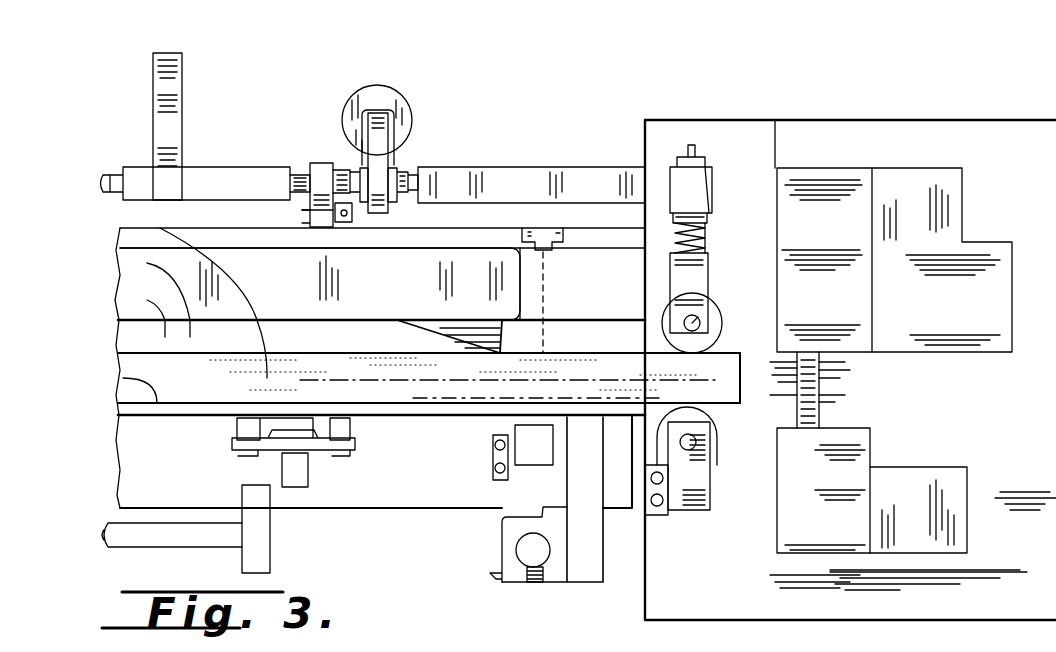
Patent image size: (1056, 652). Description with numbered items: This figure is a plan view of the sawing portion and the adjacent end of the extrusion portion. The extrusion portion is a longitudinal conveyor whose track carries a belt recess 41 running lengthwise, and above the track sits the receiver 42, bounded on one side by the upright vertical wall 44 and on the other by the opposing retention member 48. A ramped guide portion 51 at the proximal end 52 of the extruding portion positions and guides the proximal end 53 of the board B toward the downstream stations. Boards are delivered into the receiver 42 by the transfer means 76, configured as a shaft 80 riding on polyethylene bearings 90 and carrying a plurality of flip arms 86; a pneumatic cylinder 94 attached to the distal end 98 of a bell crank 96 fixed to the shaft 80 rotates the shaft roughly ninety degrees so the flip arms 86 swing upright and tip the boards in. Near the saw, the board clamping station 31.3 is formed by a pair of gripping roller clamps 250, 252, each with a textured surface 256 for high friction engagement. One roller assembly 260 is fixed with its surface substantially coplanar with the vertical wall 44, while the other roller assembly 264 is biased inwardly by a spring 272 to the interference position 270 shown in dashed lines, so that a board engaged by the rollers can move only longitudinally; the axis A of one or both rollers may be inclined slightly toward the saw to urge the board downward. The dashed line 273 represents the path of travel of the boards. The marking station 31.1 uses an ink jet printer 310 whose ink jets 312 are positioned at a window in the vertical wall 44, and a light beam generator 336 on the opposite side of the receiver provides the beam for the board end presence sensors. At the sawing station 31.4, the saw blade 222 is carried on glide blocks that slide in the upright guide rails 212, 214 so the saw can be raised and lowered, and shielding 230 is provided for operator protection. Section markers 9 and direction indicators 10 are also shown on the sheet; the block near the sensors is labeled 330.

The transfer means 76 is at (144, 142).
The flip arms 86 is at (182, 82).
The shaft 80 is at (302, 170).
The bearings 90 is at (325, 163).
The pneumatic cylinder 94 is at (390, 92).
The distal end 98 is at (372, 128).
The bell crank 96 is at (377, 157).
The retention member 48 is at (420, 292).
The ramped guide portion 51 is at (478, 333).
The proximal end 52 is at (602, 237).
The light beam generator 336 is at (562, 234).
The board B is at (160, 228).
The axis A is at (672, 307).
The receiver 42 is at (147, 263).
The belt recess 41 is at (147, 300).
The vertical wall 44 is at (123, 378).
The direction of movement 10 is at (437, 385).
The sensor 330 is at (525, 475).
The ink jets 312 is at (535, 480).
The marking station 31.1 is at (563, 587).
The ink jet printer 310 is at (588, 558).
The section line 9 is at (750, 57).
The board clamping station 31.3 is at (690, 148).
The interference position 270 is at (790, 290).
The sawing station 31.4 is at (892, 146).
The upright guide rail 214 is at (935, 190).
The spring 272 is at (710, 210).
The roller assembly 264 is at (708, 262).
The gripping roller clamp 250 is at (710, 307).
The proximal end 53 is at (758, 290).
The textured surface 256 is at (718, 417).
The gripping roller clamp 252 is at (692, 443).
The roller assembly 260 is at (677, 513).
The path of travel 273 is at (878, 383).
The saw blade 222 is at (830, 402).
The shielding 230 is at (825, 523).
The upright guide rail 212 is at (920, 525).